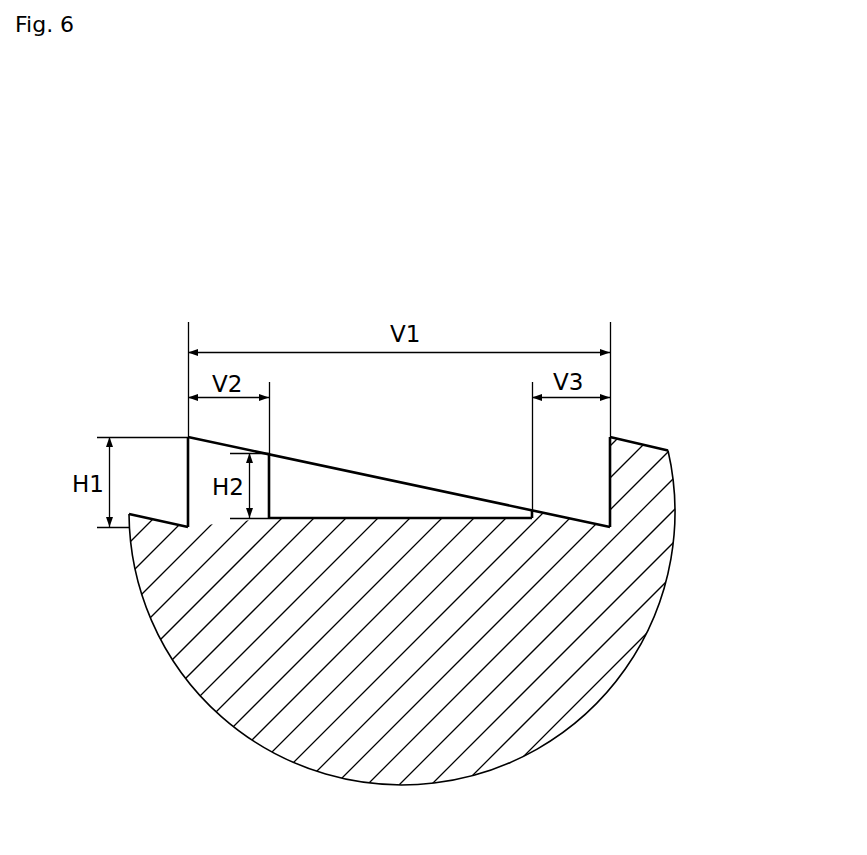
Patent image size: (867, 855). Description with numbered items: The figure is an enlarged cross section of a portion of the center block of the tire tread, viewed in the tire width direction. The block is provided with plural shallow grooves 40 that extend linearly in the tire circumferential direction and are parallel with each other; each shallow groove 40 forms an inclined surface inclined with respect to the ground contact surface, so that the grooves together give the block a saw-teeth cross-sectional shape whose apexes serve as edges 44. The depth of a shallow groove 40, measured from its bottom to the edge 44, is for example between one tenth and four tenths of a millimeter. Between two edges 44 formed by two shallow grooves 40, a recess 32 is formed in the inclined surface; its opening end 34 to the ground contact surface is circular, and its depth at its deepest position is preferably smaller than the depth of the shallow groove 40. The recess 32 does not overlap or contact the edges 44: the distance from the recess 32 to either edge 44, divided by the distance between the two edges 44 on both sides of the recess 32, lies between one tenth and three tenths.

The recess 32 is at (412, 505).
The opening end 34 is at (270, 454).
The shallow groove 40 is at (168, 506).
The edge 44 is at (188, 437).